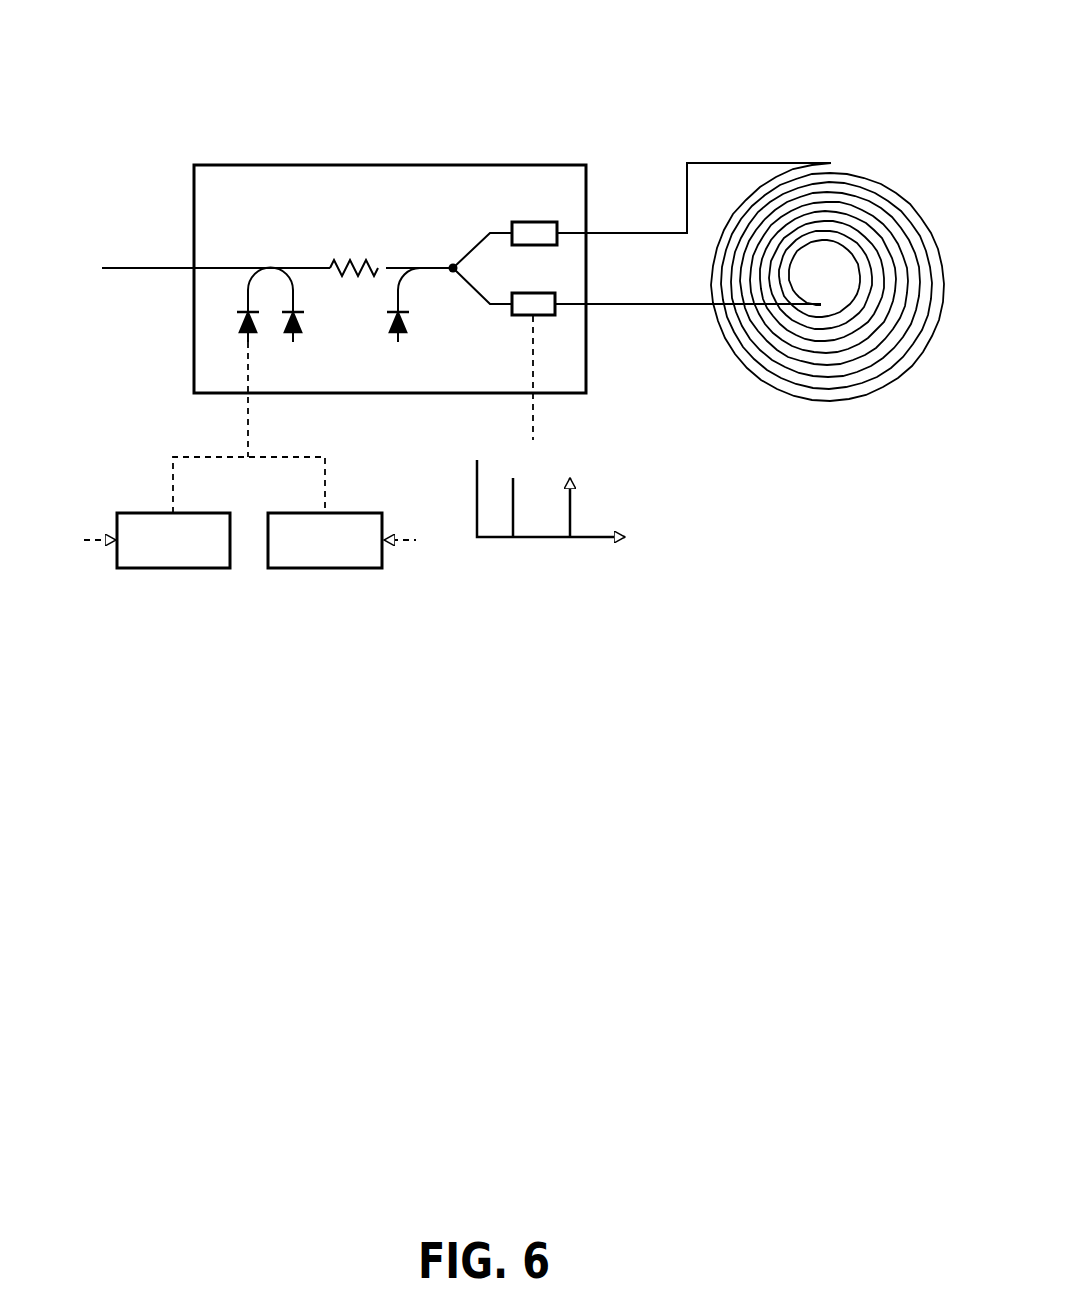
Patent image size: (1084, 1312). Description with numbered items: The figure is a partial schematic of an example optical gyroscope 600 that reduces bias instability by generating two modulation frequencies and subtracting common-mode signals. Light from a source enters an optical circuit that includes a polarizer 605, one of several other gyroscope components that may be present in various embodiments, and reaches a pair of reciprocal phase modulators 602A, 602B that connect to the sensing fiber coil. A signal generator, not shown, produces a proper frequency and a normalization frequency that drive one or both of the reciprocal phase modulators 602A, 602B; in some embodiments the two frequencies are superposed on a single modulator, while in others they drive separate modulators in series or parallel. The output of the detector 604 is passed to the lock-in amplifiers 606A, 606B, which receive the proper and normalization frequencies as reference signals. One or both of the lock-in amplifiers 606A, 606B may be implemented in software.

The optical gyroscope 600 is at (732, 36).
The polarizer 605 is at (341, 264).
The reciprocal phase modulator 602B is at (539, 222).
The reciprocal phase modulator 602A is at (545, 316).
The detector 604 is at (238, 330).
The lock-in amplifier 606B is at (178, 568).
The lock-in amplifier 606A is at (318, 568).